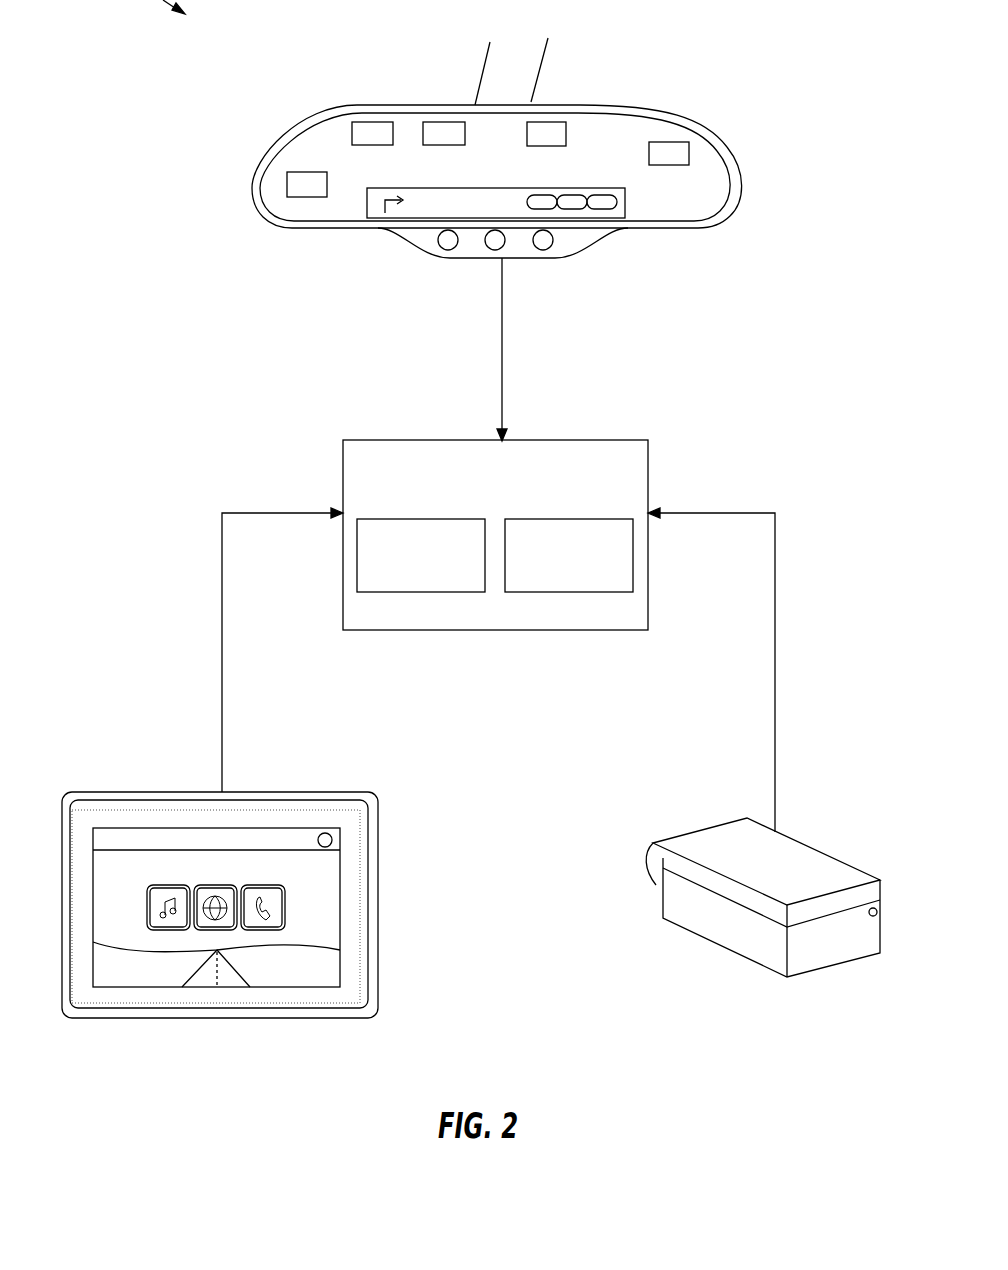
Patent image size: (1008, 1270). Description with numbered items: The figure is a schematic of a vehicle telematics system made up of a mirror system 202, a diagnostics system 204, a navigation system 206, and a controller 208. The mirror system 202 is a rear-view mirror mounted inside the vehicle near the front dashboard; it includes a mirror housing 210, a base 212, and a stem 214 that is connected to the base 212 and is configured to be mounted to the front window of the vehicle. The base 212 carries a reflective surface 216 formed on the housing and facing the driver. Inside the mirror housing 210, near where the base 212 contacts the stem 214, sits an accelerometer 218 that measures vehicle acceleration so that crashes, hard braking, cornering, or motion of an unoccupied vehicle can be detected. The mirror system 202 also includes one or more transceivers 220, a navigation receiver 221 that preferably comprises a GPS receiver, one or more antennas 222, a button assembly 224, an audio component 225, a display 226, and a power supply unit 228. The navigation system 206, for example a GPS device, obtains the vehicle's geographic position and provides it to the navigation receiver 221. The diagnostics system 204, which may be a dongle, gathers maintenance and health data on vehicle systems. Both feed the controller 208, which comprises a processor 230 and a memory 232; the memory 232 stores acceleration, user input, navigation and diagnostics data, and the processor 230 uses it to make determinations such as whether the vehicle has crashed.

The mirror system 202 is at (538, 141).
The diagnostics system 204 is at (820, 852).
The navigation system 206 is at (145, 792).
The controller 208 is at (495, 519).
The mirror housing 210 is at (483, 55).
The base section 212 is at (494, 151).
The stem 214 is at (566, 57).
The reflective surface 216 is at (293, 148).
The accelerometer 218 is at (542, 122).
The transceivers 220 is at (443, 122).
The navigation receiver 221 is at (303, 198).
The antennas 222 is at (360, 122).
The button assembly 224 is at (543, 251).
The audio component 225 is at (448, 251).
The display 226 is at (627, 212).
The power supply unit 228 is at (689, 152).
The processor 230 is at (422, 519).
The memory 232 is at (570, 519).